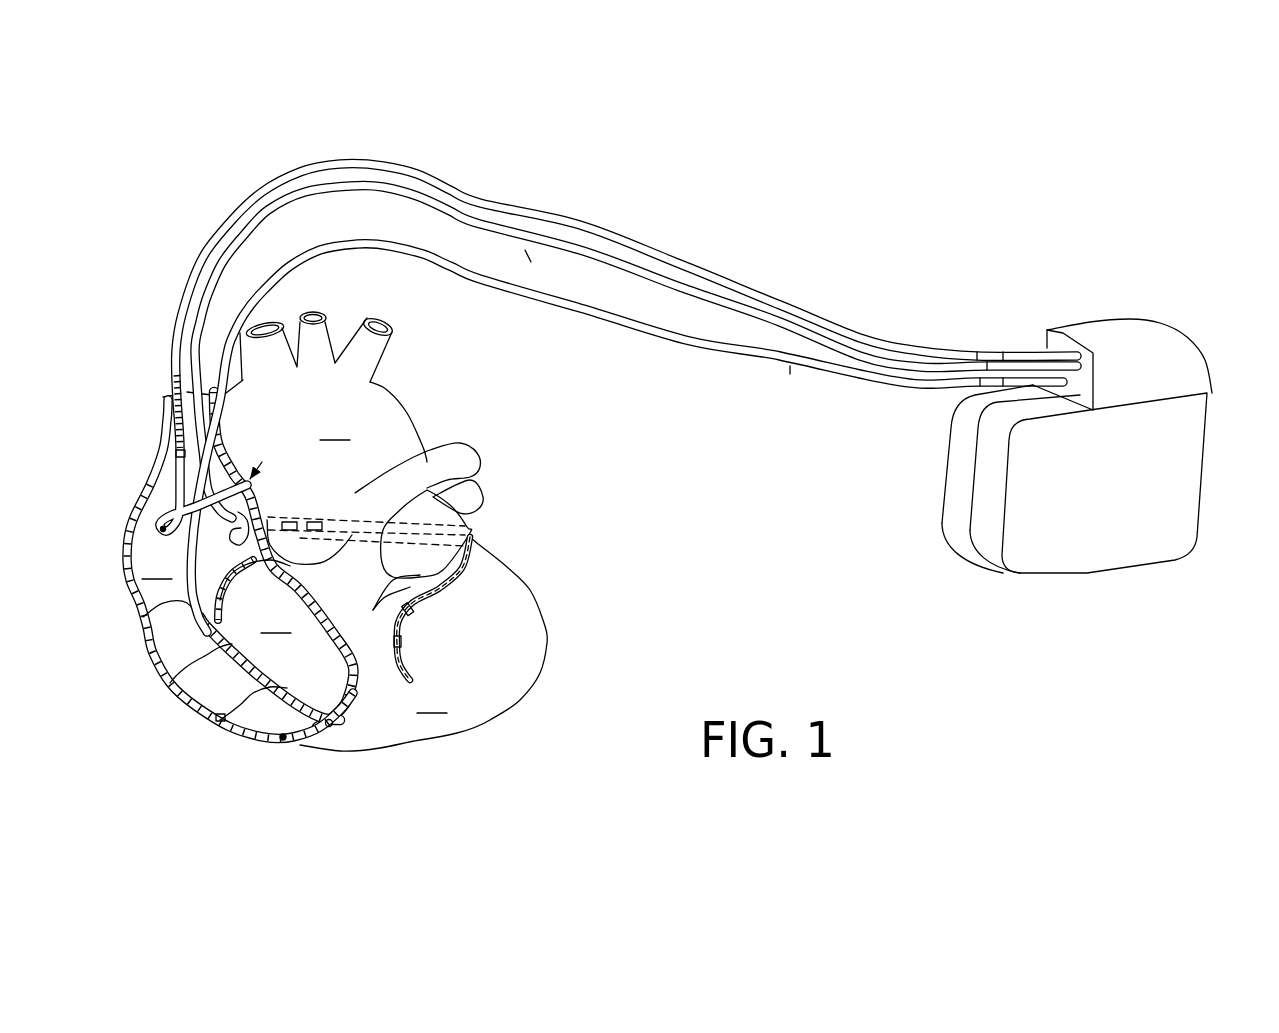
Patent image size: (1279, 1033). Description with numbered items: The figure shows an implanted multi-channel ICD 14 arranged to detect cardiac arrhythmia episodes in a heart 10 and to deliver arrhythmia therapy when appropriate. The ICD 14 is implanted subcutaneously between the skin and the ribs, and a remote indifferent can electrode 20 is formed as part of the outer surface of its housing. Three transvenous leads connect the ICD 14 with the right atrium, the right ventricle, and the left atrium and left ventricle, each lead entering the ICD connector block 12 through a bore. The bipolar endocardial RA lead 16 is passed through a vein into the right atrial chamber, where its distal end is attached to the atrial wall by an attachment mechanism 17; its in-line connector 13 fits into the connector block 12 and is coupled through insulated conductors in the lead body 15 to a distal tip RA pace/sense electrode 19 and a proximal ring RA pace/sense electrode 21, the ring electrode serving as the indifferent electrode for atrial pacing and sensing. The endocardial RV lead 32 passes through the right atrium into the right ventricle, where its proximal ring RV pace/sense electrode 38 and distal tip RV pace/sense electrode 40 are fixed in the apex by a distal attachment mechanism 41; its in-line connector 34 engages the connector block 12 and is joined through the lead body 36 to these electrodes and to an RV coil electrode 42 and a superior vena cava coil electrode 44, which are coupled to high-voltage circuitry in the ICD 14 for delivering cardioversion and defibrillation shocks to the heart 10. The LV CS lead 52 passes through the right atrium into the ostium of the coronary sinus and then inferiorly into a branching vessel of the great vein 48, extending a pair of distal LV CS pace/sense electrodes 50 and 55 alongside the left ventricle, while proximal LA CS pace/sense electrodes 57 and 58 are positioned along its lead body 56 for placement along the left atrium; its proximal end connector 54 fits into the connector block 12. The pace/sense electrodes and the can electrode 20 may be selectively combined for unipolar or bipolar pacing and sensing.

The heart 10 is at (407, 531).
The ICD connector block 12 is at (1127, 333).
The in-line connector 13 is at (1030, 335).
The ICD 14 is at (1110, 450).
The lead body 15 is at (858, 316).
The bipolar endocardial RA lead 16 is at (580, 345).
The attachment mechanism 17 is at (258, 467).
The distal tip RA pace/sense electrode 19 is at (185, 449).
The remote indifferent can electrode 20 is at (1042, 563).
The proximal ring RA pace/sense electrode 21 is at (158, 529).
The endocardial RV lead 32 is at (528, 257).
The in-line connector 34 is at (1005, 367).
The lead body 36 is at (636, 357).
The proximal ring RV pace/sense electrode 38 is at (220, 719).
The distal tip RV pace/sense electrode 40 is at (283, 737).
The distal attachment mechanism 41 is at (333, 726).
The RV coil electrode 42 is at (163, 685).
The superior vena cava coil electrode 44 is at (245, 485).
The great vein 48 is at (476, 612).
The distal LV CS pace/sense electrode 50 is at (413, 635).
The LV CS lead 52 is at (627, 523).
The proximal end connector 54 is at (1000, 387).
The distal LV CS pace/sense electrode 55 is at (393, 610).
The lead body 56 is at (790, 370).
The proximal LA CS pace/sense electrode 57 is at (290, 515).
The proximal LA CS pace/sense electrode 58 is at (308, 517).